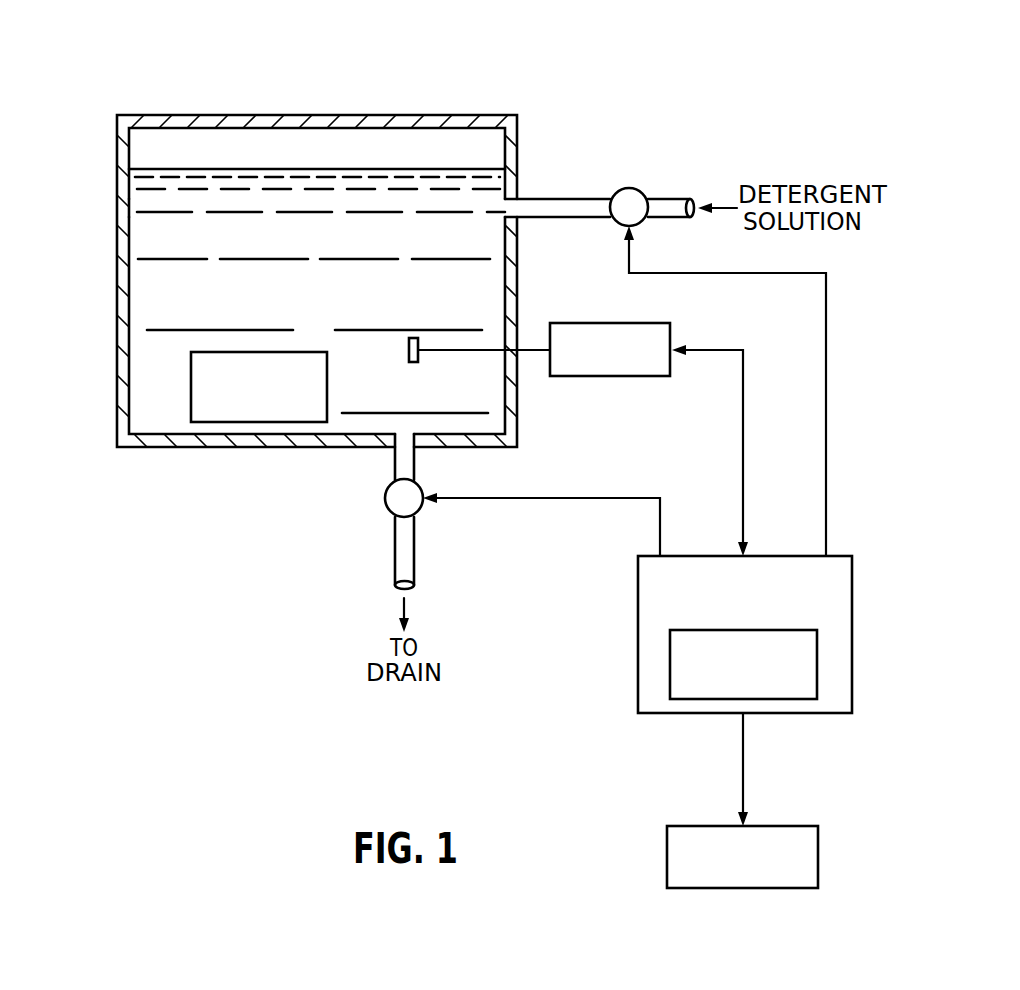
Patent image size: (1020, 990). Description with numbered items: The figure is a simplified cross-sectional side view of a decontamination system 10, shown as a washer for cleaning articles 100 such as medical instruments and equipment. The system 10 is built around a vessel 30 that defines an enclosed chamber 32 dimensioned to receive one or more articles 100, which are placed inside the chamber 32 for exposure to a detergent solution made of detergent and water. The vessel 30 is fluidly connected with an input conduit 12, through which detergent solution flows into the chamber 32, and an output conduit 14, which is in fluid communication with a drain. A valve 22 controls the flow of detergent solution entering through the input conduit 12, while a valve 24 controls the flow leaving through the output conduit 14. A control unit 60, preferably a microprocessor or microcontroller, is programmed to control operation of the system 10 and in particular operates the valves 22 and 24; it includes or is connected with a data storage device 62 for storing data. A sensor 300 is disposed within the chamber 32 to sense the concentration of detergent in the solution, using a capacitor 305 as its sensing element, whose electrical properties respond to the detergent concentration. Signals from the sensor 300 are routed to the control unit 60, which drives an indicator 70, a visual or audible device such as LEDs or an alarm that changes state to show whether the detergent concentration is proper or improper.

The decontamination system 10 is at (653, 70).
The input conduit 12 is at (553, 197).
The output conduit 14 is at (395, 460).
The valve 22 is at (635, 188).
The valve 24 is at (390, 505).
The vessel 30 is at (117, 209).
The chamber 32 is at (221, 140).
The control unit 60 is at (636, 594).
The data storage device 62 is at (668, 663).
The indicator 70 is at (665, 835).
The articles 100 is at (246, 412).
The sensor 300 is at (611, 378).
The capacitor 305 is at (418, 342).